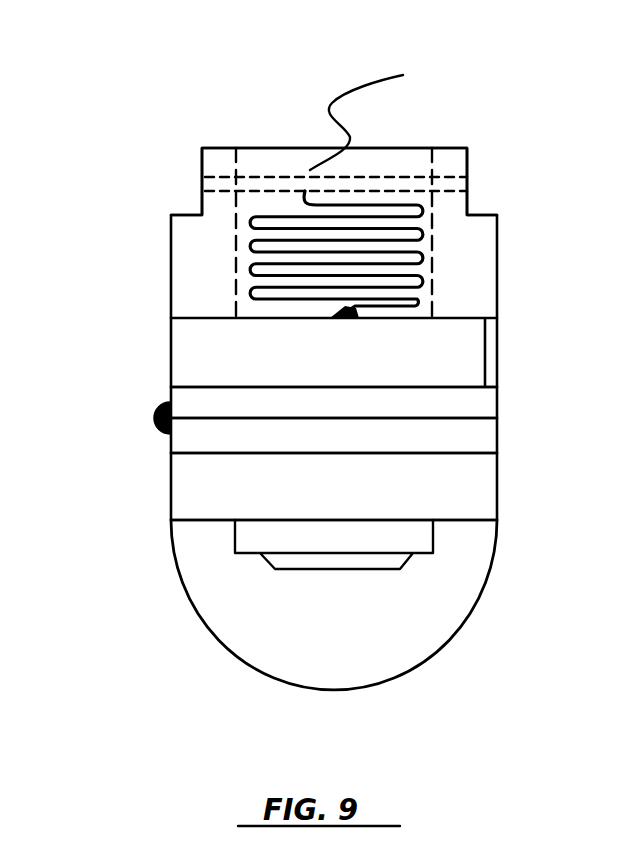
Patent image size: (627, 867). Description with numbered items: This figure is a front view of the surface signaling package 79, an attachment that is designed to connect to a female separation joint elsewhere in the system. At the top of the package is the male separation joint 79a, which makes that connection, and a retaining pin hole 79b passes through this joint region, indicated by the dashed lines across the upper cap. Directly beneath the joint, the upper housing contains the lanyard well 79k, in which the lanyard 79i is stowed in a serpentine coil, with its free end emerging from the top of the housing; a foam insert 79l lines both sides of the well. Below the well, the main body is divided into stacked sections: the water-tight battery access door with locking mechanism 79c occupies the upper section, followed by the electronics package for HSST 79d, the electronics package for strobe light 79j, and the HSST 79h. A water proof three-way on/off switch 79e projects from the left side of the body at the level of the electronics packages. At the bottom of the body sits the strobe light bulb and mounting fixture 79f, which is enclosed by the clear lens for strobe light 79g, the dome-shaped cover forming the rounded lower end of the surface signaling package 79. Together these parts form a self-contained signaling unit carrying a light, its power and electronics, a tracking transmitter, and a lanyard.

The surface signaling package 79 is at (390, 49).
The male separation joint 79a is at (405, 143).
The retaining pin hole 79b is at (473, 182).
The water-tight battery access door with locking mechanism 79c is at (510, 350).
The electronics package for HSST 79d is at (334, 405).
The water proof 3-way on/off switch 79e is at (150, 407).
The strobe light bulb and mounting fixture 79f is at (363, 538).
The clear lens for strobe light 79g is at (418, 663).
The HSST 79h is at (334, 486).
The lanyard 79i is at (379, 113).
The electronics package for strobe light 79j is at (334, 436).
The lanyard well 79k is at (265, 205).
The foam insert 79l is at (205, 266).